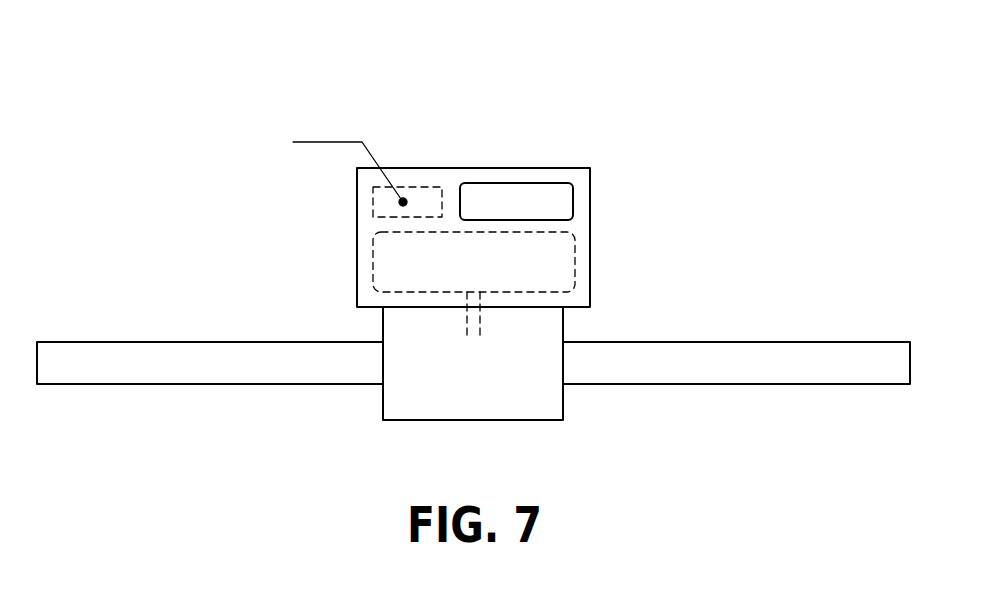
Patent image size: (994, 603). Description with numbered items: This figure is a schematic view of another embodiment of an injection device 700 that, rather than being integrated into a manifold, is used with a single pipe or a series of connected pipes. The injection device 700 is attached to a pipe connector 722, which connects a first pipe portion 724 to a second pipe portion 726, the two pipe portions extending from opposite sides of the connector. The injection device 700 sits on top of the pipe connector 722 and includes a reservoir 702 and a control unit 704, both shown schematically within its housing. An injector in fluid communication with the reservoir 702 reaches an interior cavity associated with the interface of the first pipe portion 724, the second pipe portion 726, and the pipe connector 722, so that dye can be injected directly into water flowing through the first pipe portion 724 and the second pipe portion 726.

The injection device 700 is at (552, 107).
The reservoir 702 is at (578, 261).
The control unit 704 is at (373, 202).
The pipe connector 722 is at (563, 400).
The first pipe portion 724 is at (721, 357).
The second pipe portion 726 is at (227, 357).